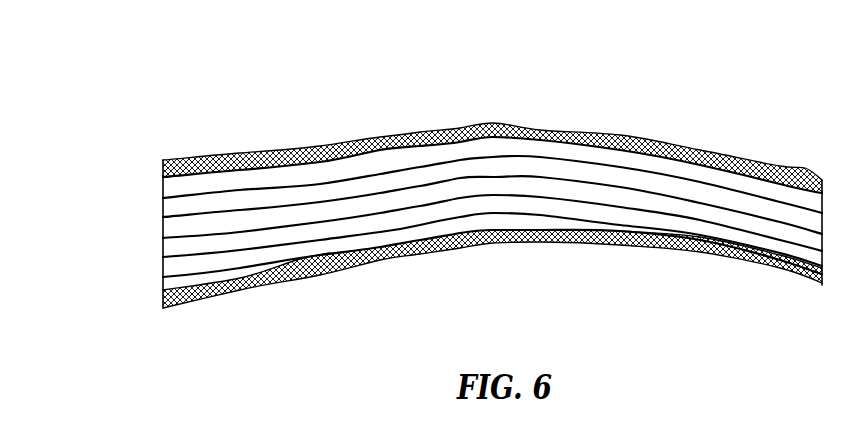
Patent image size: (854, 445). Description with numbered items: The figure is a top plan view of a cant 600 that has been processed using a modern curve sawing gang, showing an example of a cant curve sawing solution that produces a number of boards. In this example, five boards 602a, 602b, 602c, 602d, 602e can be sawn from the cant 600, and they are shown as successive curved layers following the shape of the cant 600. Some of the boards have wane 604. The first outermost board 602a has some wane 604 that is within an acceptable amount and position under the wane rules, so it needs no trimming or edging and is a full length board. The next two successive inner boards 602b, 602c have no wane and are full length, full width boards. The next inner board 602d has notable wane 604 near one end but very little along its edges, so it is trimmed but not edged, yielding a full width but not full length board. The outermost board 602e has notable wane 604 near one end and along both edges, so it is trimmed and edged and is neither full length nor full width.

The cant 600 is at (658, 56).
The first outermost board 602a is at (163, 188).
The inner board 602b is at (163, 208).
The inner board 602c is at (163, 228).
The inner board 602d is at (163, 247).
The outermost board 602e is at (163, 266).
The wane 604 is at (250, 143).